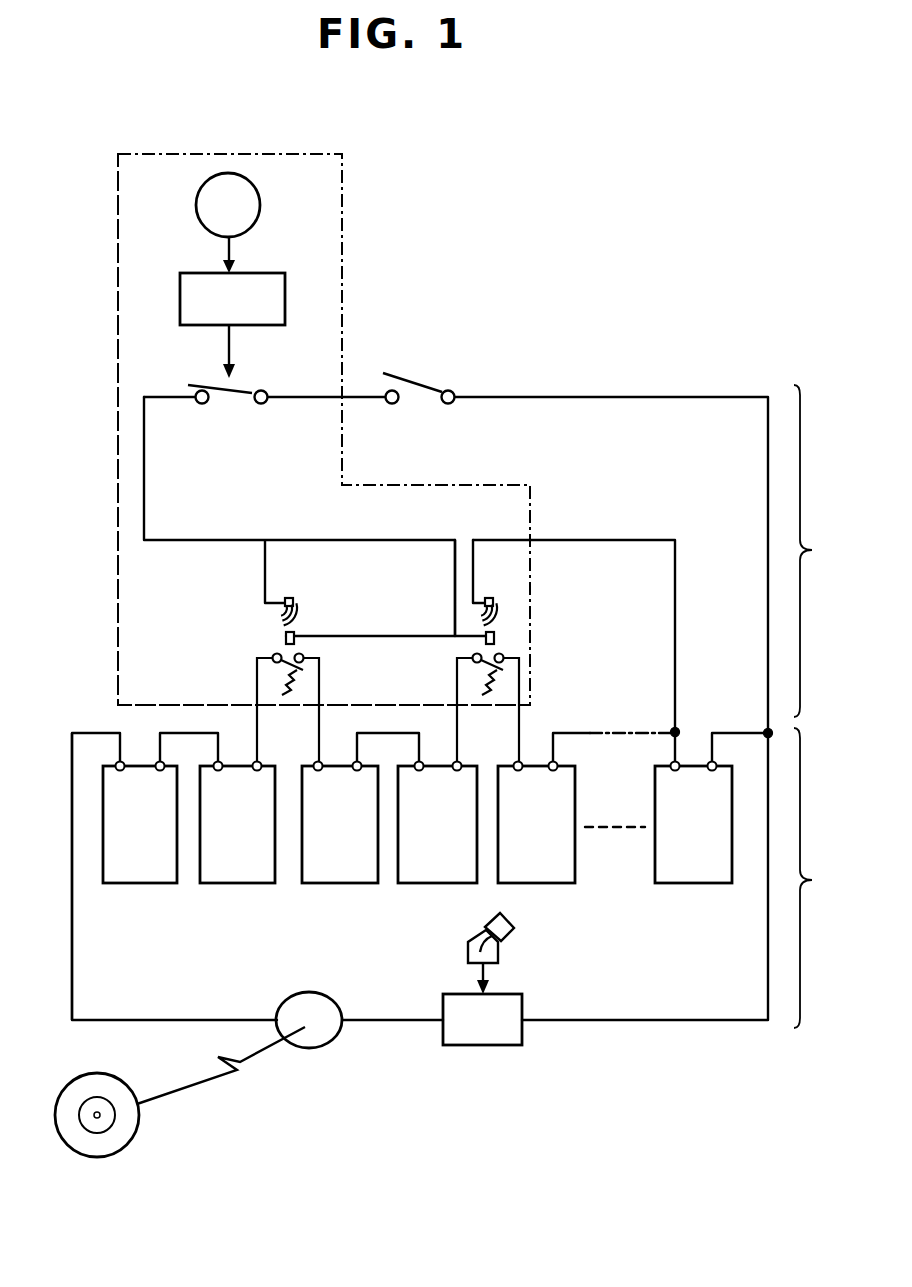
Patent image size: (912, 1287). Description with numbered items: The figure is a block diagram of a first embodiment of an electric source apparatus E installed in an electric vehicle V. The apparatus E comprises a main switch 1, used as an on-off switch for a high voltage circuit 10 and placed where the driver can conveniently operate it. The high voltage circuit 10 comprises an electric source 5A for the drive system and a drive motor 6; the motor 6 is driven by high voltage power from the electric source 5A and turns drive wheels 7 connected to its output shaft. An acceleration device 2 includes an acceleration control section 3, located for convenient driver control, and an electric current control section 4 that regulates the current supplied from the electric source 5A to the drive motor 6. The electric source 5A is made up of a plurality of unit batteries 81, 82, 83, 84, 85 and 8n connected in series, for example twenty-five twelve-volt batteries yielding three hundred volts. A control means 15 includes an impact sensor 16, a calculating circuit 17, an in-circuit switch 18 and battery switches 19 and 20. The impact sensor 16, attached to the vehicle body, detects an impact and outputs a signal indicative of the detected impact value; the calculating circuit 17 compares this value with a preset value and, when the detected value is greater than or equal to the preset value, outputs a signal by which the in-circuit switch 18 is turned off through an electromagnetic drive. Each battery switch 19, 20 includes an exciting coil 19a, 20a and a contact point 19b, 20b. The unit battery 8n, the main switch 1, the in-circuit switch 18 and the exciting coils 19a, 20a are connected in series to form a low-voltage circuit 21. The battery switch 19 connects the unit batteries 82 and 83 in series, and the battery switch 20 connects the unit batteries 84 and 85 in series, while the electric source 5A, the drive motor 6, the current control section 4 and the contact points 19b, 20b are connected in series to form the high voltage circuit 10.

The main switch 1 is at (422, 401).
The acceleration device 2 is at (520, 979).
The acceleration control section 3 is at (498, 950).
The electric current control section 4 is at (497, 1016).
The electric source 5A is at (92, 887).
The drive motor 6 is at (340, 1010).
The drive wheels 7 is at (135, 1142).
The unit battery 81 is at (146, 884).
The unit battery 82 is at (246, 884).
The unit battery 83 is at (338, 884).
The unit battery 84 is at (442, 884).
The unit battery 85 is at (548, 884).
The unit battery 8n is at (694, 884).
The high voltage circuit 10 is at (821, 878).
The control means 15 is at (342, 222).
The impact sensor 16 is at (260, 215).
The calculating circuit 17 is at (285, 296).
The in-circuit switch 18 is at (232, 401).
The battery switch 19 is at (336, 670).
The exciting coil 19a is at (323, 609).
The contact point 19b is at (311, 693).
The battery switch 20 is at (547, 673).
The exciting coil 20a is at (535, 612).
The contact point 20b is at (524, 694).
The low-voltage circuit 21 is at (821, 551).
The electric vehicle V is at (106, 374).
The electric source apparatus E is at (106, 586).